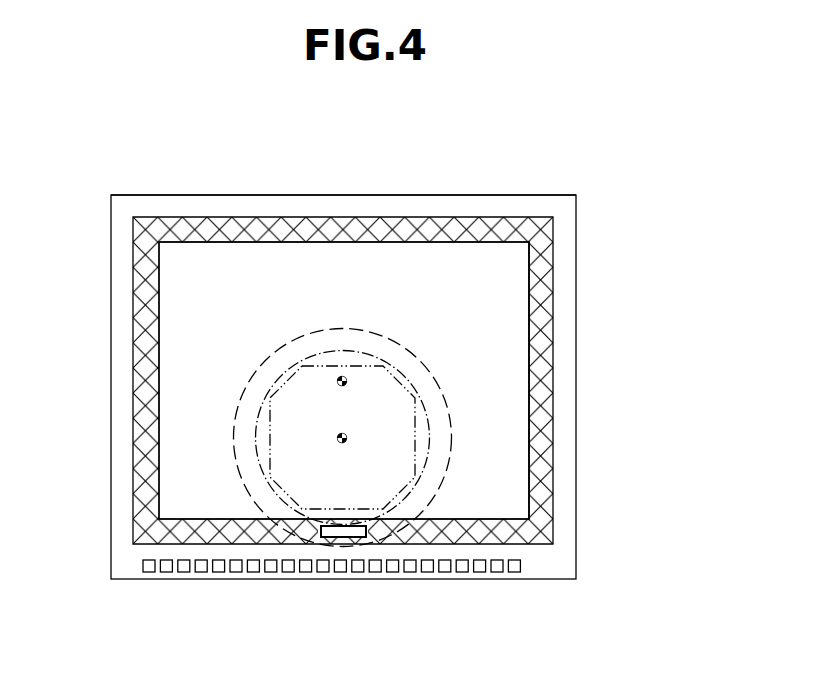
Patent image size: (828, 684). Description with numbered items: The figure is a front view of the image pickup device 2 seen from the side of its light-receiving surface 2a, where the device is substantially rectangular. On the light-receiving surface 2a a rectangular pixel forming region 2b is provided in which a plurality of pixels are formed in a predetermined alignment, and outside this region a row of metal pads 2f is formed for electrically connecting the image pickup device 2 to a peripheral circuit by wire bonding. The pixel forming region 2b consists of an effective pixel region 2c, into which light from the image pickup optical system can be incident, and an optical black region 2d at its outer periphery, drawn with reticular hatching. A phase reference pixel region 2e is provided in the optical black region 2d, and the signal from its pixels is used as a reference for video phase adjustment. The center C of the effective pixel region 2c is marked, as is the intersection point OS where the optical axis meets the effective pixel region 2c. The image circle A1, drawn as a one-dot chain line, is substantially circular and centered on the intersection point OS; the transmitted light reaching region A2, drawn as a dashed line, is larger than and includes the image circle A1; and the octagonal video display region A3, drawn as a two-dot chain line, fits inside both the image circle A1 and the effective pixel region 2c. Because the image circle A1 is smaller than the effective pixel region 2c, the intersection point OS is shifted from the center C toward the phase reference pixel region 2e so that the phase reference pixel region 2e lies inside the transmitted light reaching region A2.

The image pickup device 2 is at (253, 195).
The light-receiving surface 2a is at (166, 205).
The pixel forming region 2b is at (470, 218).
The effective pixel region 2c is at (498, 293).
The optical black region 2d is at (548, 322).
The phase reference pixel region 2e is at (353, 533).
The metal pads 2f is at (151, 573).
The image circle A1 is at (374, 357).
The transmitted light reaching region A2 is at (424, 366).
The video display region A3 is at (331, 365).
The center of the effective pixel region C is at (337, 385).
The intersection point OS is at (348, 437).